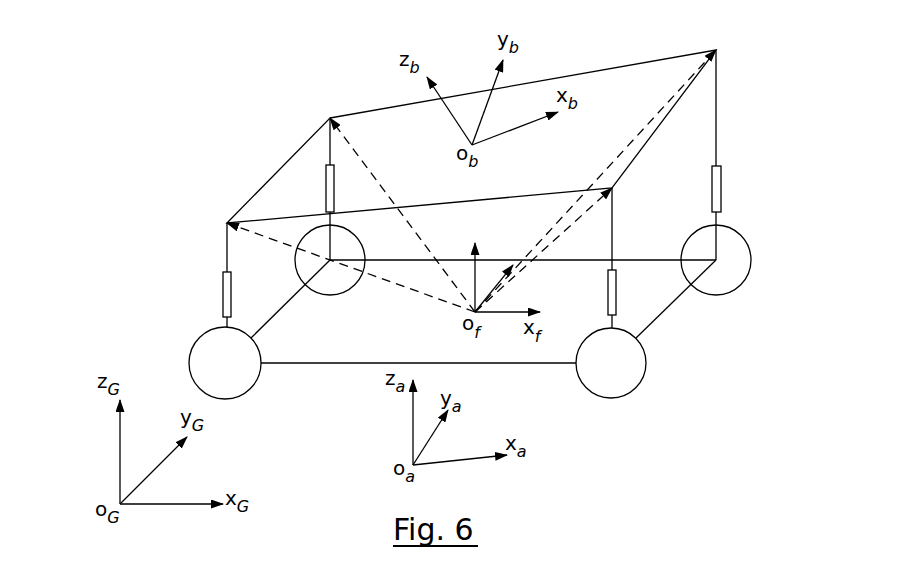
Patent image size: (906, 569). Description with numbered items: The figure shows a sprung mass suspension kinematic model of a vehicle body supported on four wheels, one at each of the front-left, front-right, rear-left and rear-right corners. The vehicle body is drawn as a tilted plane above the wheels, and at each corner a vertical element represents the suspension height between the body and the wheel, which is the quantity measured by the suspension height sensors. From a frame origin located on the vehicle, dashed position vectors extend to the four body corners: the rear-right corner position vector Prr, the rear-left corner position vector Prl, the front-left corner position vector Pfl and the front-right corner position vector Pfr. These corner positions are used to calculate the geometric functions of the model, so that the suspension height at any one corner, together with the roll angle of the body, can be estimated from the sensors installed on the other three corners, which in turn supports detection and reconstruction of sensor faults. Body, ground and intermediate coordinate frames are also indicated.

The rear-right corner position vector Prr is at (351, 270).
The rear-left corner position vector Prl is at (402, 215).
The front-left corner position vector Pfl is at (595, 181).
The front-right corner position vector Pfr is at (543, 250).